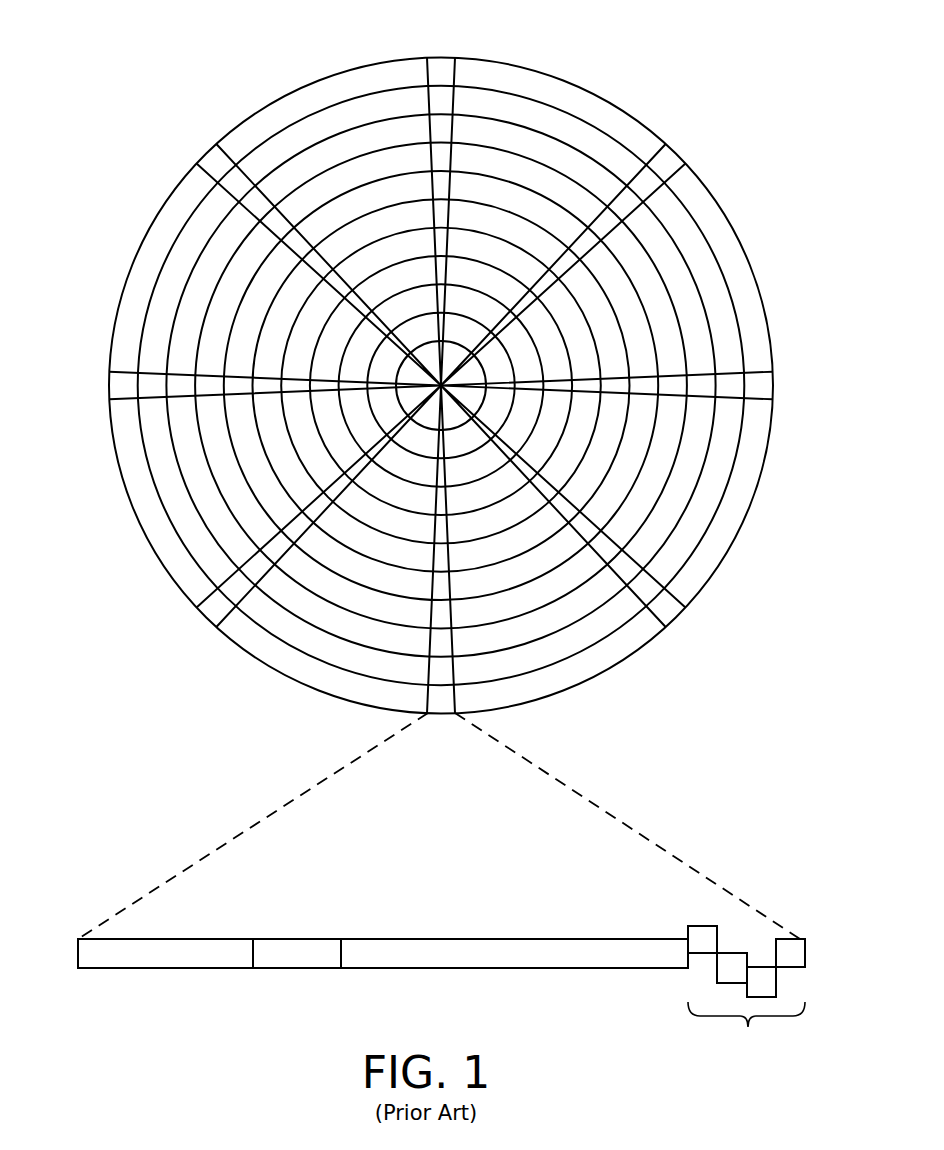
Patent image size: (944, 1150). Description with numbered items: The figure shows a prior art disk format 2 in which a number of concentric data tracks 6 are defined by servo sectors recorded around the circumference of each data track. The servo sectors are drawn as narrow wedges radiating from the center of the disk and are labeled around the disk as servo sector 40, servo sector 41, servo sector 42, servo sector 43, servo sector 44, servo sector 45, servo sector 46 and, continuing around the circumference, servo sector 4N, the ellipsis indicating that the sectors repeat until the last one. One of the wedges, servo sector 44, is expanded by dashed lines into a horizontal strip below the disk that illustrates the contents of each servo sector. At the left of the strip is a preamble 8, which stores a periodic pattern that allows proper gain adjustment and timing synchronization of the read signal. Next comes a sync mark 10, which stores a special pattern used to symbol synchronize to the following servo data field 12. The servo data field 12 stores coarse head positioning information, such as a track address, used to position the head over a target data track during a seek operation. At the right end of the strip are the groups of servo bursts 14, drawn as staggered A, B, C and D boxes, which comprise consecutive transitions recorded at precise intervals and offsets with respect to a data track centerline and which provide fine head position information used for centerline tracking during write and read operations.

The disk format 2 is at (196, 60).
The data track 6 is at (555, 122).
The servo sector 40 is at (443, 68).
The servo sector 41 is at (670, 162).
The servo sector 42 is at (767, 387).
The servo sector 43 is at (668, 610).
The servo sector 44 is at (292, 788).
The servo sector 45 is at (212, 612).
The servo sector 46 is at (113, 383).
The servo sector 4N is at (215, 160).
The preamble 8 is at (143, 965).
The sync mark 10 is at (291, 965).
The servo data field 12 is at (502, 967).
The servo bursts 14 is at (668, 903).